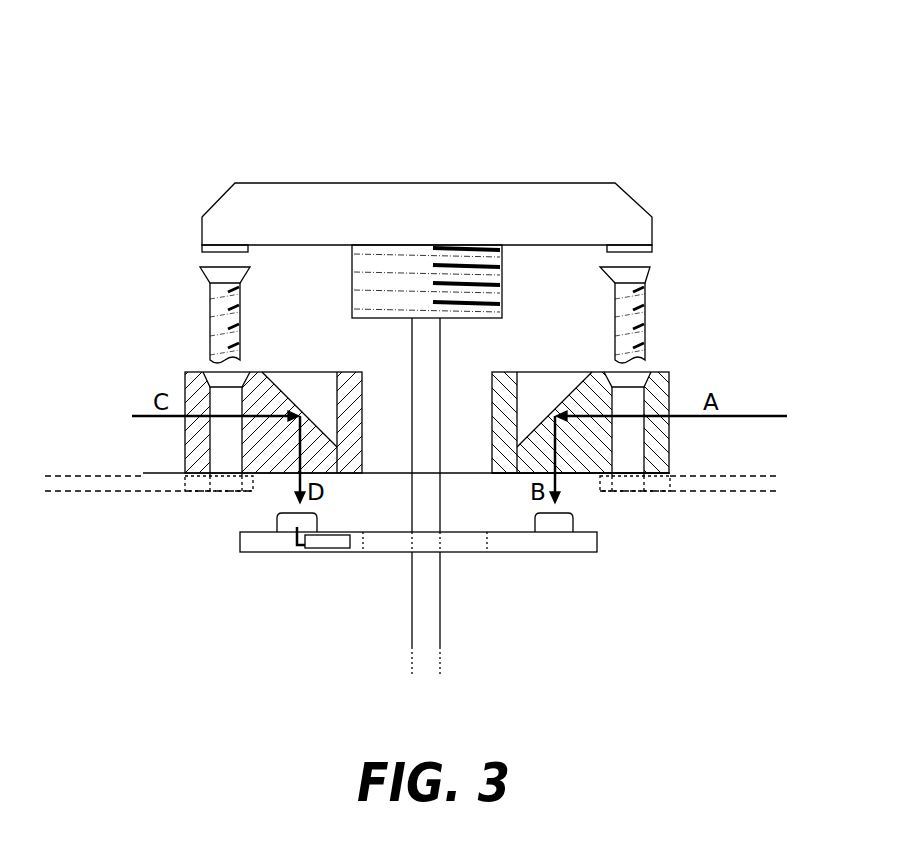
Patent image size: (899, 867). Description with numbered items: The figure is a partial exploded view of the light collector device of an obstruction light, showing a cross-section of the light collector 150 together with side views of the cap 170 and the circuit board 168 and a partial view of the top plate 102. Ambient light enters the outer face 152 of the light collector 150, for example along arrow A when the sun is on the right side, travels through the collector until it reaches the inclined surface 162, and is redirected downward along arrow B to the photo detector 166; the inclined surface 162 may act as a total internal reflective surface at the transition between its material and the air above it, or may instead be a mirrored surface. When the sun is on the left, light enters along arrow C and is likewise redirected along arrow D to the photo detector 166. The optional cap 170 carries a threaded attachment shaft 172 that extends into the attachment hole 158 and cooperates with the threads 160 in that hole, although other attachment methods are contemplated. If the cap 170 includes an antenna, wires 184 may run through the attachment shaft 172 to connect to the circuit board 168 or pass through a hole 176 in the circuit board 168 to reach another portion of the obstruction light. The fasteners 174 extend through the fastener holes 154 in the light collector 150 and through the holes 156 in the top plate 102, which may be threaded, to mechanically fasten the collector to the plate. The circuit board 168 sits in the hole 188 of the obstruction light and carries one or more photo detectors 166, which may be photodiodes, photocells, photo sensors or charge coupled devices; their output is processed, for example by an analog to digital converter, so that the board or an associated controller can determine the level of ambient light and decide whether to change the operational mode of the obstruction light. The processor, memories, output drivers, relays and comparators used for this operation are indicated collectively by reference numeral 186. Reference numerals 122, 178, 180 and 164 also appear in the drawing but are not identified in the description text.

The clamping assembly 122 is at (157, 172).
The cap 170 is at (615, 207).
The plate feet 178 is at (657, 243).
The threaded attachment shaft 172 is at (503, 290).
The fasteners 174 is at (212, 290).
The attachment hole 158 is at (404, 387).
The wires 184 is at (433, 627).
The light collector 150 is at (157, 382).
The outer face 152 is at (672, 387).
The threads 160 is at (488, 395).
The inclined surface 162 is at (548, 405).
The fastener holes 154 is at (642, 447).
The bottom surface 180 is at (672, 468).
The top plate 102 is at (150, 488).
The hole 188 is at (252, 499).
The holes 156 is at (625, 480).
The lower surface 164 is at (568, 474).
The hole 176 is at (387, 543).
The circuit board 168 is at (503, 553).
The photo detectors 166 is at (288, 527).
The processor and memory components 186 is at (328, 549).